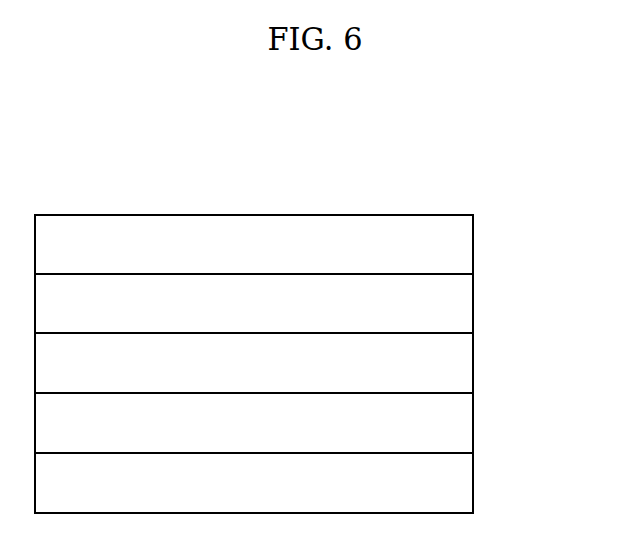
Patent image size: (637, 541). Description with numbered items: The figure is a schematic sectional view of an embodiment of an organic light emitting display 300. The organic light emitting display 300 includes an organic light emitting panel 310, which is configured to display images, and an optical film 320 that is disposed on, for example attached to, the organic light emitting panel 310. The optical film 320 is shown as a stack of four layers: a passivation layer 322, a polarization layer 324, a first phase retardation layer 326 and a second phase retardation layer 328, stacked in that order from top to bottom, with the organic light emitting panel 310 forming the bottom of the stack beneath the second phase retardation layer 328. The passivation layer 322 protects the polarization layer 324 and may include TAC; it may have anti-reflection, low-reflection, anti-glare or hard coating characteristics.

The organic light emitting display 300 is at (300, 172).
The optical film 320 is at (541, 228).
The passivation layer 322 is at (462, 246).
The polarization layer 324 is at (462, 306).
The first phase retardation layer 326 is at (462, 366).
The second phase retardation layer 328 is at (462, 426).
The organic light emitting panel 310 is at (462, 484).